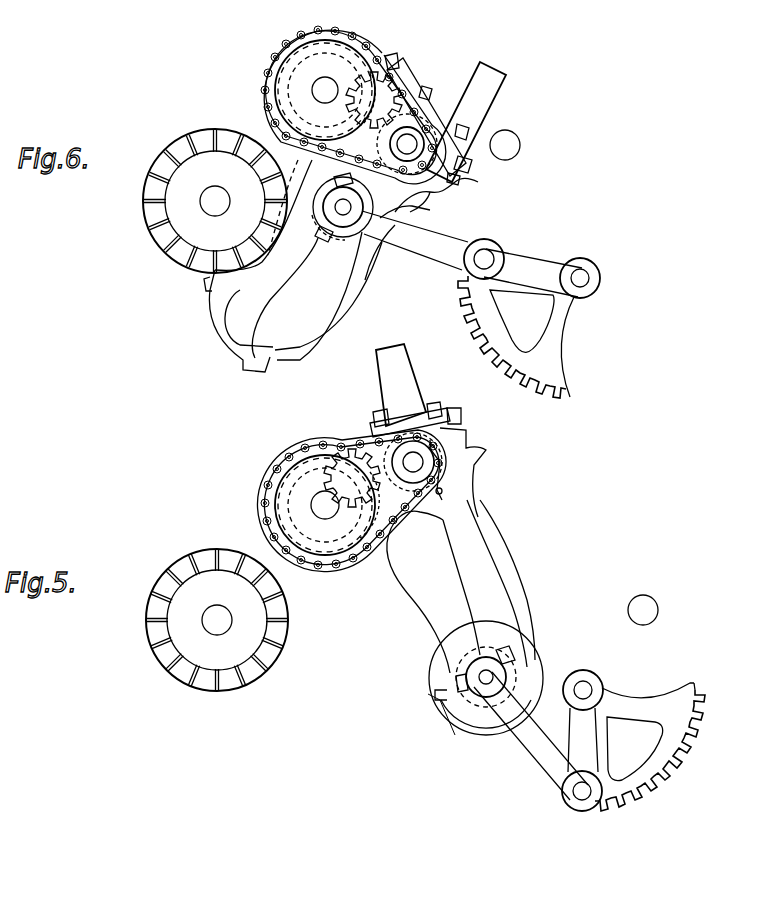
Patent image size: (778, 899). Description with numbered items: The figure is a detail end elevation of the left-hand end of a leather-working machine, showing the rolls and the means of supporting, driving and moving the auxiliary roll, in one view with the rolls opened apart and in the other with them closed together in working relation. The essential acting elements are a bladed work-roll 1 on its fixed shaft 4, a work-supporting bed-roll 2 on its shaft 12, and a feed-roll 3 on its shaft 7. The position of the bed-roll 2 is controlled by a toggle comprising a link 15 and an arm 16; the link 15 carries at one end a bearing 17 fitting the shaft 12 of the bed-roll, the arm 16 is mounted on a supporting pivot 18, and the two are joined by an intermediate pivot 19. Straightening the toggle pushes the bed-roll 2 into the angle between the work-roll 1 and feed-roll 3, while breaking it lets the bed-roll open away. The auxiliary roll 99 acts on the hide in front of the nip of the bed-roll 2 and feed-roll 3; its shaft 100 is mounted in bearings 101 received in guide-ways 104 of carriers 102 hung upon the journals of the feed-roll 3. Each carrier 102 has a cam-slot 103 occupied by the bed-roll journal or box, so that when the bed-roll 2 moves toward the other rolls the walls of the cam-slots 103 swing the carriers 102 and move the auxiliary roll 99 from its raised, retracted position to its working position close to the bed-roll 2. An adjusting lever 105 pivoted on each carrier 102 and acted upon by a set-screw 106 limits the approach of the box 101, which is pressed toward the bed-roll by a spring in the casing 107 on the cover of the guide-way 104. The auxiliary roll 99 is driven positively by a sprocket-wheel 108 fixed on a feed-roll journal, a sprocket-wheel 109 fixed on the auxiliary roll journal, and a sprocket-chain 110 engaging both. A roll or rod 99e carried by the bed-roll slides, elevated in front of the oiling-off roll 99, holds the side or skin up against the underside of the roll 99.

In FIG. 5, the work-roll 1 is at (210, 695).
In FIG. 6, the work-roll 1 is at (170, 246).
In FIG. 5, the bed-roll 2 is at (432, 664).
In FIG. 6, the bed-roll 2 is at (313, 260).
In FIG. 5, the feed-roll 3 is at (373, 467).
In FIG. 6, the feed-roll 3 is at (410, 140).
In FIG. 5, the shaft of the work-roll 4 is at (215, 607).
In FIG. 6, the shaft of the work-roll 4 is at (212, 192).
In FIG. 5, the shaft of the feed-roll 7 is at (318, 502).
In FIG. 6, the shaft of the feed-roll 7 is at (331, 86).
In FIG. 5, the shaft of the bed-roll 12 is at (485, 683).
In FIG. 6, the shaft of the bed-roll 12 is at (338, 237).
In FIG. 5, the link 15 is at (530, 748).
In FIG. 6, the link 15 is at (438, 252).
In FIG. 5, the arm 16 is at (580, 730).
In FIG. 6, the arm 16 is at (528, 252).
In FIG. 5, the bearing 17 is at (481, 660).
In FIG. 6, the bearing 17 is at (343, 210).
In FIG. 5, the supporting pivot 18 is at (585, 690).
In FIG. 6, the supporting pivot 18 is at (588, 275).
In FIG. 5, the intermediate pivot 19 is at (580, 794).
In FIG. 6, the intermediate pivot 19 is at (486, 250).
In FIG. 5, the auxiliary roll 99 is at (412, 497).
In FIG. 6, the auxiliary roll 99 is at (427, 95).
In FIG. 5, the roll or rod 99e is at (660, 605).
In FIG. 6, the roll or rod 99e is at (522, 143).
In FIG. 5, the shaft of the auxiliary roll 100 is at (425, 462).
In FIG. 6, the shaft of the auxiliary roll 100 is at (428, 130).
In FIG. 5, the bearings 101 is at (393, 438).
In FIG. 6, the bearings 101 is at (437, 140).
In FIG. 5, the carriers 102 is at (470, 520).
In FIG. 6, the carriers 102 is at (385, 248).
In FIG. 5, the cam-slots 103 is at (458, 616).
In FIG. 6, the cam-slots 103 is at (235, 326).
In FIG. 5, the guide-ways 104 is at (450, 490).
In FIG. 6, the guide-ways 104 is at (405, 209).
In FIG. 5, the adjusting lever 105 is at (472, 478).
In FIG. 6, the adjusting lever 105 is at (446, 190).
In FIG. 5, the set-screw 106 is at (463, 416).
In FIG. 6, the set-screw 106 is at (472, 167).
In FIG. 5, the casing 107 is at (400, 370).
In FIG. 6, the casing 107 is at (478, 92).
In FIG. 5, the sprocket-wheel 108 is at (352, 558).
In FIG. 6, the sprocket-wheel 108 is at (282, 108).
In FIG. 5, the sprocket-wheel 109 is at (389, 450).
In FIG. 6, the sprocket-wheel 109 is at (371, 104).
In FIG. 5, the sprocket-chain 110 is at (312, 448).
In FIG. 6, the sprocket-chain 110 is at (276, 72).